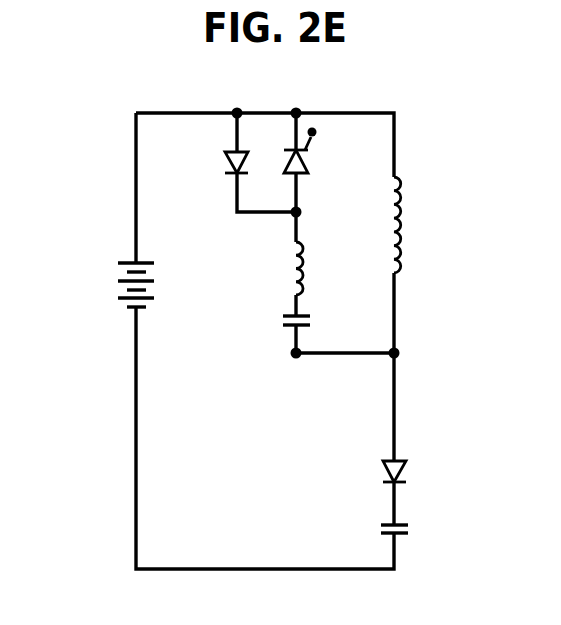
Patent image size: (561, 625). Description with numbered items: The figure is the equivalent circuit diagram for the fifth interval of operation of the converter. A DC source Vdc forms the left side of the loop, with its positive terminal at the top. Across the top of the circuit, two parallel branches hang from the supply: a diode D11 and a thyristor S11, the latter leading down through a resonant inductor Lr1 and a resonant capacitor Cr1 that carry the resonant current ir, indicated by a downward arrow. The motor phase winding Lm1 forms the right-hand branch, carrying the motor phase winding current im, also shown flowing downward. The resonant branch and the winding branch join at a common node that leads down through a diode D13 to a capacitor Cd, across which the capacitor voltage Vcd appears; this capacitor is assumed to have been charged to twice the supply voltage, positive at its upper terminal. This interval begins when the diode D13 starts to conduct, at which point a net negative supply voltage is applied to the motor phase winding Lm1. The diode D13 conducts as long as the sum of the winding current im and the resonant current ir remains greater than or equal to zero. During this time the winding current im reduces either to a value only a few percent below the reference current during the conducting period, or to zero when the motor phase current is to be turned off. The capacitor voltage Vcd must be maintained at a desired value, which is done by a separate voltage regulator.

The DC supply voltage Vdc is at (114, 278).
The diode D11 is at (214, 169).
The thyristor S11 is at (318, 158).
The motor phase winding Lm1 is at (374, 225).
The resonant inductor Lr1 is at (324, 268).
The resonant capacitor Cr1 is at (321, 327).
The diode D13 is at (369, 479).
The capacitor Cd is at (380, 532).
The capacitor voltage Vcd is at (495, 539).
The motor phase winding current im is at (428, 180).
The resonant current ir is at (267, 323).